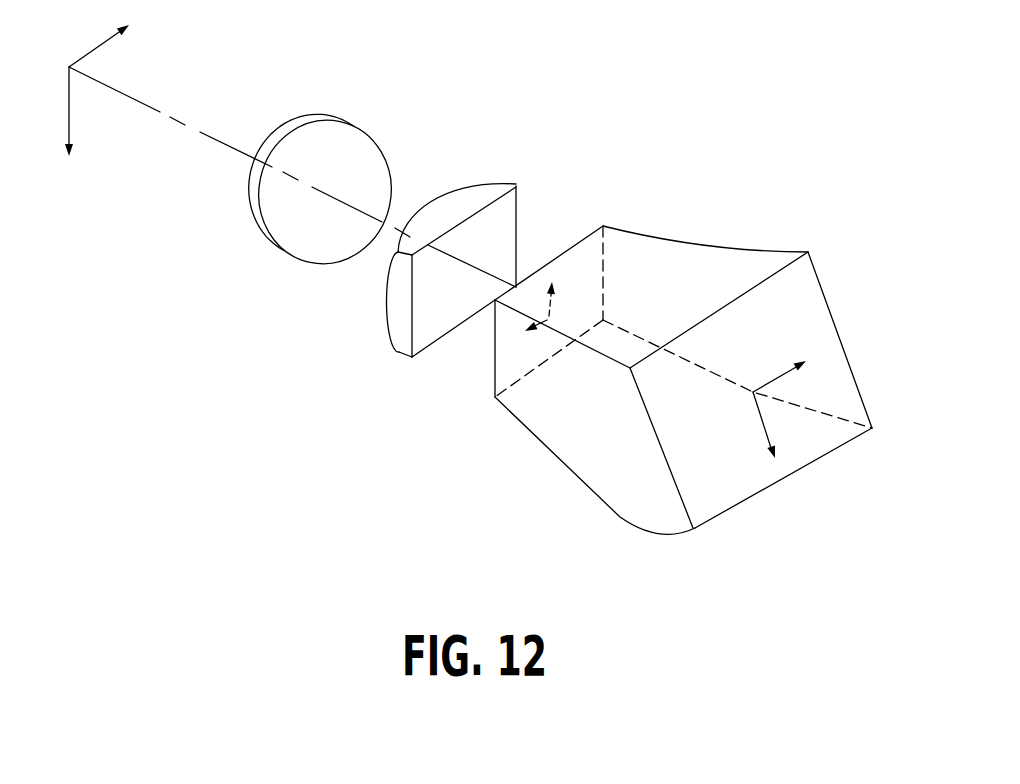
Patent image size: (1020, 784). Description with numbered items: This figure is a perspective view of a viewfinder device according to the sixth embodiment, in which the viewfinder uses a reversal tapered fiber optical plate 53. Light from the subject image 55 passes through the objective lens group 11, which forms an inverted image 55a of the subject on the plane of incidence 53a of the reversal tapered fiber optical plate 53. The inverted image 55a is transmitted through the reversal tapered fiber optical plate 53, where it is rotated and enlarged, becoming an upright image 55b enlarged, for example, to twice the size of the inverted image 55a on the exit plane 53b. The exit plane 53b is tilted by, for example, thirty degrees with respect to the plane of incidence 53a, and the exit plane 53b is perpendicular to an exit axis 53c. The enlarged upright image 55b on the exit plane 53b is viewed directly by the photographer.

The objective lens group 11 is at (510, 176).
The reversal tapered fiber optical plate 53 is at (585, 449).
The plane of incidence 53a is at (568, 276).
The exit plane 53b is at (693, 493).
The exit axis 53c is at (753, 390).
The subject image 55 is at (88, 54).
The inverted image 55a is at (547, 320).
The upright image 55b is at (762, 420).